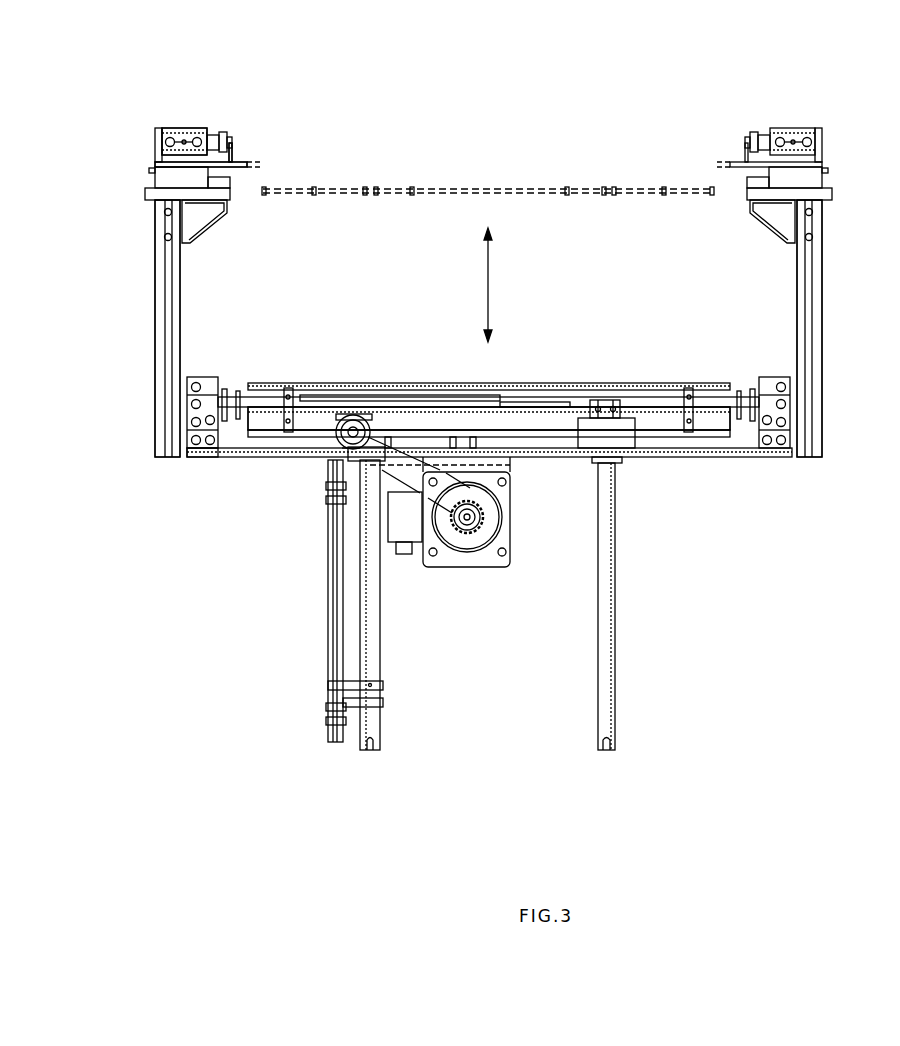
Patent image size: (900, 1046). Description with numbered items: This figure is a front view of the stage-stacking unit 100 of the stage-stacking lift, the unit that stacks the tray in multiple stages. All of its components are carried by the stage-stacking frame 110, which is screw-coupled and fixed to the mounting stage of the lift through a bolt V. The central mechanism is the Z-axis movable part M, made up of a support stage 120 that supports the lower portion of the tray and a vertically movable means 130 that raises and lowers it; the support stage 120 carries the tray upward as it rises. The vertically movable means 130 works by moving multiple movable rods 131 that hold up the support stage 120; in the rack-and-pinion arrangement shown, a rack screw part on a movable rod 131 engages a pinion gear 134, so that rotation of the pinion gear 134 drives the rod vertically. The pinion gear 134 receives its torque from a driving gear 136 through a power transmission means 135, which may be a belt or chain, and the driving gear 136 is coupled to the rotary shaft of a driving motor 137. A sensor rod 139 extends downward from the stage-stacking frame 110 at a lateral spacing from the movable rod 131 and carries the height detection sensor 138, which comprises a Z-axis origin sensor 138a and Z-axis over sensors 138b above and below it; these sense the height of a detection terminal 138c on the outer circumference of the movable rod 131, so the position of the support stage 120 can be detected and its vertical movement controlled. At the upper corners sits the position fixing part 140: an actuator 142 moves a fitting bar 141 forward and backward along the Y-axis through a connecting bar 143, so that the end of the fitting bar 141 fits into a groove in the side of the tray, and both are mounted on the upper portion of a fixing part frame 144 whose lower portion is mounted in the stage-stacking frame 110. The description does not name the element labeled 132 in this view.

The stage-stacking unit 100 is at (681, 24).
The stage-stacking frame 110 is at (720, 458).
The support stage 120 is at (610, 383).
The vertically movable means 130 is at (415, 698).
The movable rod 131 is at (598, 637).
The horizontal actuator cylinder 132 is at (404, 397).
The pinion gear 134 is at (352, 414).
The power transmission means 135 is at (392, 478).
The driving gear 136 is at (467, 522).
The driving motor 137 is at (498, 527).
The height detection sensor 138 is at (229, 712).
The Z-axis origin sensor 138a is at (326, 707).
The Z-axis over sensor 138b is at (326, 486).
The detection terminal 138c is at (372, 690).
The sensor rod 139 is at (328, 632).
The position fixing part 140 is at (149, 106).
The fitting bar 141 is at (238, 164).
The actuator 142 is at (186, 128).
The connecting bar 143 is at (230, 158).
The fixing part frame 144 is at (155, 325).
The bolt V is at (197, 458).
The Z-axis movable part M is at (833, 711).